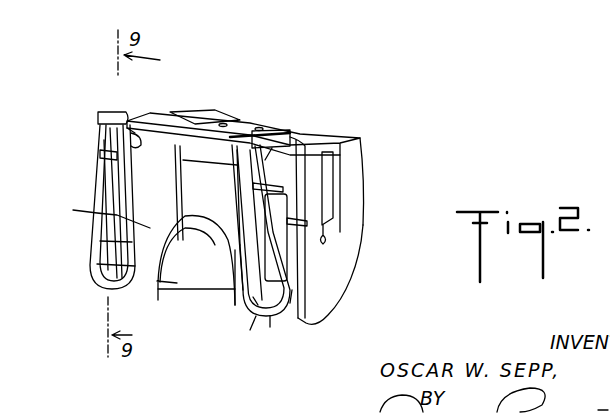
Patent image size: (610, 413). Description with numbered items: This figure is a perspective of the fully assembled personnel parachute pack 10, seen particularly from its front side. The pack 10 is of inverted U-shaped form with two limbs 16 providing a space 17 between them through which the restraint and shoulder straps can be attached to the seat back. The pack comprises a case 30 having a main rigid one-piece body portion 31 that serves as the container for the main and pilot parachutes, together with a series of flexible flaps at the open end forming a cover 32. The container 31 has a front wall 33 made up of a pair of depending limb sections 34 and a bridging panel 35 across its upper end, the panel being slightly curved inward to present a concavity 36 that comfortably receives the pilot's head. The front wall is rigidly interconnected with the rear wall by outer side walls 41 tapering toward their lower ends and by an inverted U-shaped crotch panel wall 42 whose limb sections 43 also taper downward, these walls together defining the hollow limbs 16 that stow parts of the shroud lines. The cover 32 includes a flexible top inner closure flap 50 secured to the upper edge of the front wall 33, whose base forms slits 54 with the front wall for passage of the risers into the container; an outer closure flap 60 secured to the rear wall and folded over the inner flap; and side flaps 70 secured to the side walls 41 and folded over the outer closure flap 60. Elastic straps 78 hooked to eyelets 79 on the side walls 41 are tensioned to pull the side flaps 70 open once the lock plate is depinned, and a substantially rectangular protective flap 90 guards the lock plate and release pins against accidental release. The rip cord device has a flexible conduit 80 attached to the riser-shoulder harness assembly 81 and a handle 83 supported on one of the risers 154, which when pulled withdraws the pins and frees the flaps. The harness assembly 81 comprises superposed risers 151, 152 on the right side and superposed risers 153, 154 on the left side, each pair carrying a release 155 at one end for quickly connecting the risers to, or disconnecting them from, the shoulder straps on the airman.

The personnel parachute pack 10 is at (375, 136).
The limbs 16 is at (148, 285).
The space 17 is at (212, 290).
The case 30 is at (365, 200).
The main rigid one-piece body portion 31 is at (320, 267).
The cover 32 is at (338, 134).
The front wall 33 is at (283, 300).
The limb sections 34 is at (293, 287).
The bridging panel 35 is at (100, 175).
The concavity 36 is at (212, 155).
The outer side walls 41 is at (347, 175).
The crotch panel wall 42 is at (117, 215).
The limb sections 43 is at (170, 278).
The top inner closure flap 50 is at (240, 166).
The slits 54 is at (300, 158).
The outer closure flap 60 is at (280, 136).
The side flaps 70 is at (175, 122).
The elastic straps 78 is at (320, 212).
The eyelets 79 is at (327, 240).
The flexible conduit 80 is at (270, 327).
The riser-shoulder harness assembly 81 is at (85, 292).
The handle 83 is at (168, 233).
The protective flap 90 is at (207, 122).
The riser 151 is at (97, 264).
The riser 152 is at (100, 241).
The riser 153 is at (250, 330).
The riser 154 is at (253, 297).
The release 155 is at (98, 117).